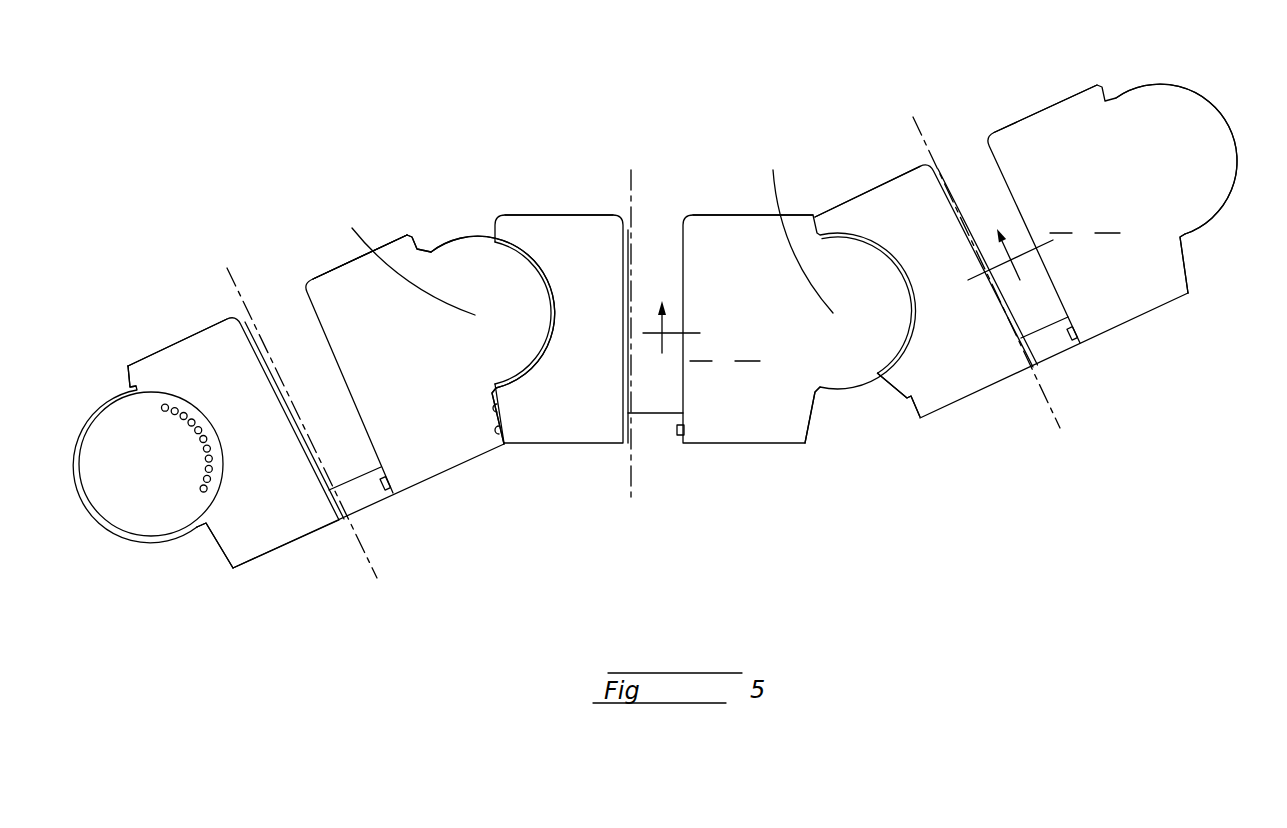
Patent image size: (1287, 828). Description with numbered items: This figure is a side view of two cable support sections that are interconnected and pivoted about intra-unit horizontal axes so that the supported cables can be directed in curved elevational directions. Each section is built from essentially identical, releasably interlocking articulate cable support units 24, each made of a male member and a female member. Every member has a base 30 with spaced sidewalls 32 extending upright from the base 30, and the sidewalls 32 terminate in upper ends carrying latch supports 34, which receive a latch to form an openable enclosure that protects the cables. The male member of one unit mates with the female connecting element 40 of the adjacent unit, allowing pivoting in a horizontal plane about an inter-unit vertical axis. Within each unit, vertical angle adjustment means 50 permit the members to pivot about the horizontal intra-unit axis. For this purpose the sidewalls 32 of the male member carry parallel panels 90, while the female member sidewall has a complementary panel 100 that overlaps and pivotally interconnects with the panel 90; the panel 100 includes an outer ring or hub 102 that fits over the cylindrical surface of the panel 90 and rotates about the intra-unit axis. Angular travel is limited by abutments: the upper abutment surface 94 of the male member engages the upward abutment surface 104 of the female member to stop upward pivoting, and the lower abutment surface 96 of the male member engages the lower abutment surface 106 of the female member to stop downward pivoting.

The articulate cable support unit 24 is at (664, 350).
The base 30 is at (287, 538).
The sidewall 32 is at (600, 298).
The latch support 34 is at (155, 351).
The female connecting element 40 is at (367, 498).
The vertical angle adjustment means 50 is at (177, 433).
The panel 90 is at (1227, 167).
The upper abutment surface 94 is at (128, 381).
The lower abutment surface 96 is at (493, 415).
The panel 100 is at (132, 522).
The outer ring or hub 102 is at (83, 508).
The upward abutment surface 104 is at (492, 227).
The lower abutment surface 106 is at (215, 547).